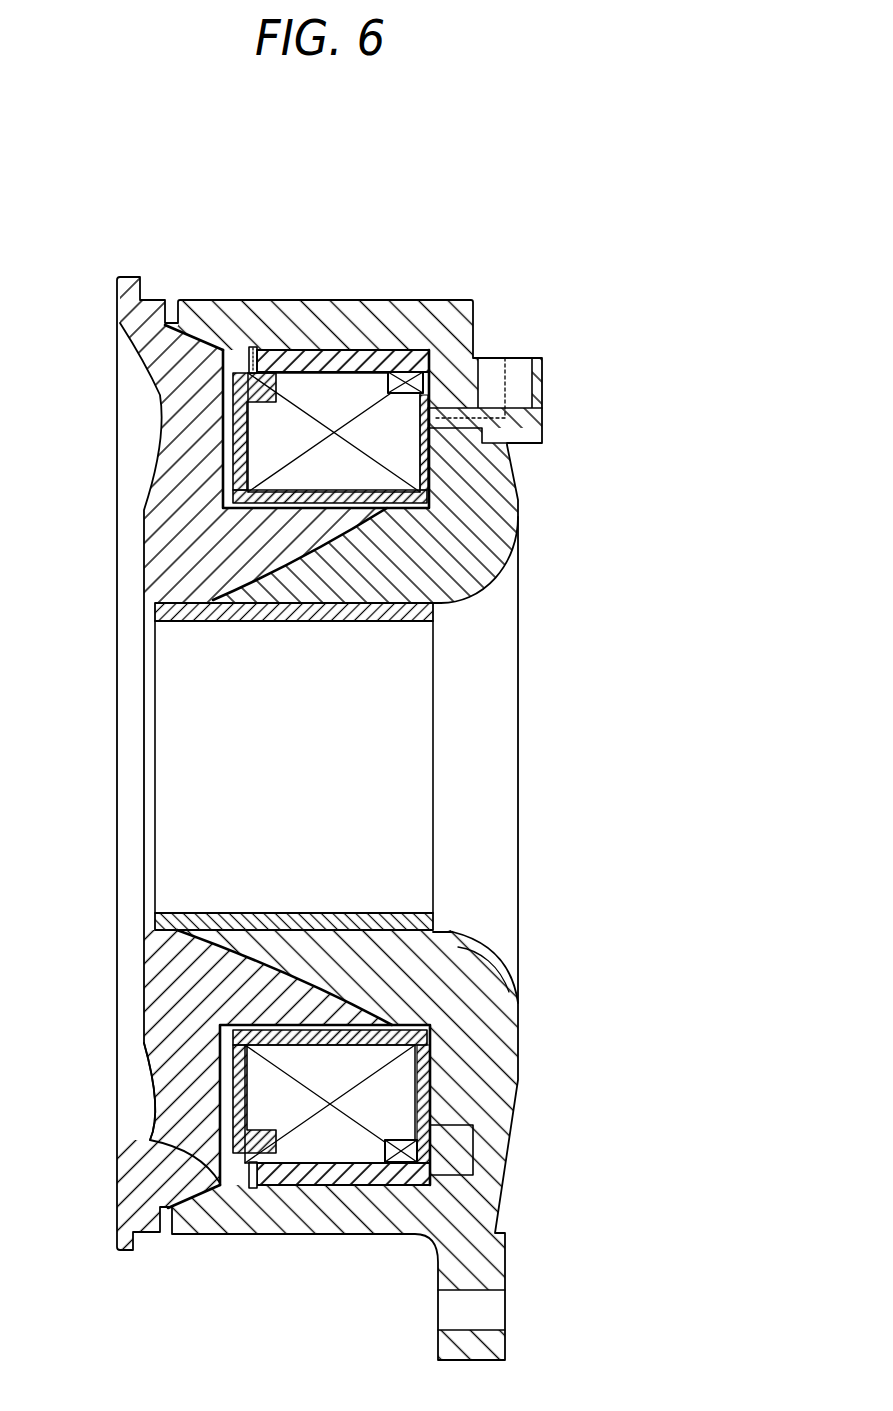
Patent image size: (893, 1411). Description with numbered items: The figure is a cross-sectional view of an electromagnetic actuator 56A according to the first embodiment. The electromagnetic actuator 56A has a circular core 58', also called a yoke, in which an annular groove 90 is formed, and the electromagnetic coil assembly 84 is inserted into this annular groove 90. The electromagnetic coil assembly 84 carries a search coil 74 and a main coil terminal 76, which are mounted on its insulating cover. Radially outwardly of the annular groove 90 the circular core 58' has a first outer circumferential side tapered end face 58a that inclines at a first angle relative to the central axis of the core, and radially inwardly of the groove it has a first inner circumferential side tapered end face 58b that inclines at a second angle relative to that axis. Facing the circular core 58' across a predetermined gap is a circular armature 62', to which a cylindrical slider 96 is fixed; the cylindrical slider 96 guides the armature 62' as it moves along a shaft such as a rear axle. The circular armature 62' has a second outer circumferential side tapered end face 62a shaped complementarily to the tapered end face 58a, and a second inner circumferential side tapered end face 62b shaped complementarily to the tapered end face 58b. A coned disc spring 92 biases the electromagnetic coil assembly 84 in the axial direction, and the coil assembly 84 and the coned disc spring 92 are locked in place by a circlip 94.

The electromagnetic actuator 56A is at (470, 256).
The circular core 58' is at (407, 680).
The first outer circumferential side tapered end face 58a is at (153, 1150).
The first inner circumferential side tapered end face 58b is at (235, 972).
The circular armature 62' is at (257, 660).
The second outer circumferential side tapered end face 62a is at (190, 1205).
The second inner circumferential side tapered end face 62b is at (331, 990).
The search coil 74 is at (405, 352).
The main coil terminal 76 is at (508, 378).
The electromagnetic coil assembly 84 is at (335, 385).
The annular groove 90 is at (410, 1082).
The coned disc spring 92 is at (222, 368).
The circlip 94 is at (250, 345).
The cylindrical slider 96 is at (293, 622).